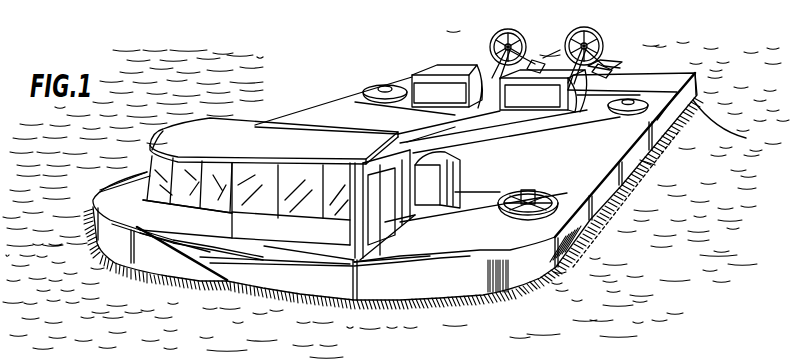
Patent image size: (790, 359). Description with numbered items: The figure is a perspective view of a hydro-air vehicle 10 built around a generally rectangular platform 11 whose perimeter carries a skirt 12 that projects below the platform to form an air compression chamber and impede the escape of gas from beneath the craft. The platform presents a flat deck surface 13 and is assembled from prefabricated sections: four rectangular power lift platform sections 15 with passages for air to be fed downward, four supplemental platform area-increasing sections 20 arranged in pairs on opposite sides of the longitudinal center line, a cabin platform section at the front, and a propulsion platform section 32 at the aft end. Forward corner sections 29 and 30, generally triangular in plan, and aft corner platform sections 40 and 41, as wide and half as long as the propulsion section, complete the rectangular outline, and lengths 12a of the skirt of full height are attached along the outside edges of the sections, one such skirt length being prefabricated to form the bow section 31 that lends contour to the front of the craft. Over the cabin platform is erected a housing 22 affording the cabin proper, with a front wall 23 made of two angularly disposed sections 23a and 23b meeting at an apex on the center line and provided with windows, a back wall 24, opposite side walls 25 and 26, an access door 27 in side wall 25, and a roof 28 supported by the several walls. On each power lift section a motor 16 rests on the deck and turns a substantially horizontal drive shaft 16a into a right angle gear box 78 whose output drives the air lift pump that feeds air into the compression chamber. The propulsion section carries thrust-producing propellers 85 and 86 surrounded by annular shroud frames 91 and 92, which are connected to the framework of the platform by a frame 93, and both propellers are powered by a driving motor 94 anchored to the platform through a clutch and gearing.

The hydro-air vehicle 10 is at (304, 104).
The platform 11 is at (603, 148).
The skirt 12 is at (620, 200).
The skirt length 12a is at (730, 136).
The deck surface 13 is at (650, 172).
The power lift platform section 15 is at (127, 172).
The motor 16 is at (544, 107).
The drive shaft 16a is at (533, 106).
The supplemental platform area-increasing section 20 is at (412, 134).
The housing 22 is at (182, 135).
The front wall 23 is at (326, 230).
The front wall section 23a is at (212, 229).
The front wall section 23b is at (302, 242).
The back wall 24 is at (358, 129).
The side wall 25 is at (378, 226).
The side wall 26 is at (155, 152).
The access door 27 is at (392, 222).
The roof 28 is at (272, 147).
The forward corner section 29 is at (130, 203).
The forward corner section 30 is at (493, 253).
The bow section 31 is at (222, 260).
The propulsion platform section 32 is at (594, 76).
The aft corner platform section 40 is at (474, 72).
The aft corner platform section 41 is at (659, 77).
The right angle gear box 78 is at (697, 87).
The propeller 85 is at (588, 40).
The propeller 86 is at (518, 42).
The annular shroud frame 91 is at (600, 66).
The annular shroud frame 92 is at (508, 44).
The frame 93 is at (618, 67).
The driving motor 94 is at (543, 58).